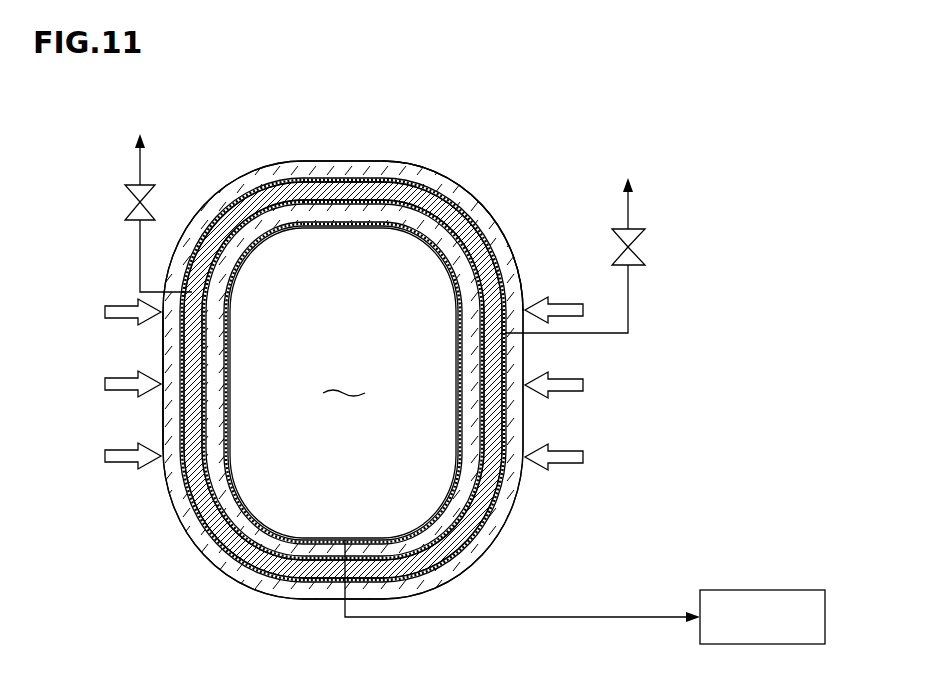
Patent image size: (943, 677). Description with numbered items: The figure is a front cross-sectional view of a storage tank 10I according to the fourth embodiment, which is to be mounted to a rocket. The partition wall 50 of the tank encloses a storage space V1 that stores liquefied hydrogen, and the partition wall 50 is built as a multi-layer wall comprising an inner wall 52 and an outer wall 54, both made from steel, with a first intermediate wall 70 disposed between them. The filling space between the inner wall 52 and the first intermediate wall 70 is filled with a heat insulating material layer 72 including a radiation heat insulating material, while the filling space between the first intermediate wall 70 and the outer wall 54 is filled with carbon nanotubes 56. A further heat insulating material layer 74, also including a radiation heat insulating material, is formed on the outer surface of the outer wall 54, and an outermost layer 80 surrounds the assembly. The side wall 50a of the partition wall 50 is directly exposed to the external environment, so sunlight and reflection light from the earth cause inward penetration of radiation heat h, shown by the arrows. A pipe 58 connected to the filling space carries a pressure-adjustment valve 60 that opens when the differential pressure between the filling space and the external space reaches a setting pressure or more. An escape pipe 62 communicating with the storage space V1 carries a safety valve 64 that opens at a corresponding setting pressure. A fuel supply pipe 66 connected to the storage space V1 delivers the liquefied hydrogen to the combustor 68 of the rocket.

The storage tank 10I is at (421, 139).
The partition wall 50 is at (277, 163).
The side wall 50a is at (163, 350).
The inner wall 52 is at (350, 233).
The outer wall 54 is at (336, 182).
The carbon nanotubes 56 is at (478, 215).
The pipe 58 is at (630, 283).
The pressure-adjustment valve 60 is at (645, 250).
The escape pipe 62 is at (141, 264).
The safety valve 64 is at (125, 206).
The fuel supply pipe 66 is at (576, 616).
The combustor 68 is at (758, 589).
The first intermediate wall 70 is at (240, 216).
The heat insulating material layer 72 is at (311, 231).
The heat insulating material layer 74 is at (305, 182).
The outer heat insulating layer 80 is at (463, 184).
The radiation heat h is at (586, 384).
The storage space V1 is at (267, 495).